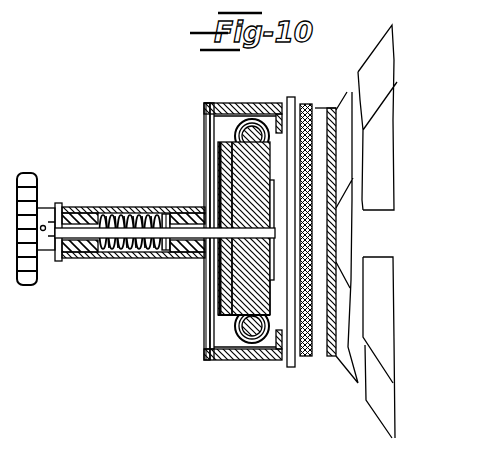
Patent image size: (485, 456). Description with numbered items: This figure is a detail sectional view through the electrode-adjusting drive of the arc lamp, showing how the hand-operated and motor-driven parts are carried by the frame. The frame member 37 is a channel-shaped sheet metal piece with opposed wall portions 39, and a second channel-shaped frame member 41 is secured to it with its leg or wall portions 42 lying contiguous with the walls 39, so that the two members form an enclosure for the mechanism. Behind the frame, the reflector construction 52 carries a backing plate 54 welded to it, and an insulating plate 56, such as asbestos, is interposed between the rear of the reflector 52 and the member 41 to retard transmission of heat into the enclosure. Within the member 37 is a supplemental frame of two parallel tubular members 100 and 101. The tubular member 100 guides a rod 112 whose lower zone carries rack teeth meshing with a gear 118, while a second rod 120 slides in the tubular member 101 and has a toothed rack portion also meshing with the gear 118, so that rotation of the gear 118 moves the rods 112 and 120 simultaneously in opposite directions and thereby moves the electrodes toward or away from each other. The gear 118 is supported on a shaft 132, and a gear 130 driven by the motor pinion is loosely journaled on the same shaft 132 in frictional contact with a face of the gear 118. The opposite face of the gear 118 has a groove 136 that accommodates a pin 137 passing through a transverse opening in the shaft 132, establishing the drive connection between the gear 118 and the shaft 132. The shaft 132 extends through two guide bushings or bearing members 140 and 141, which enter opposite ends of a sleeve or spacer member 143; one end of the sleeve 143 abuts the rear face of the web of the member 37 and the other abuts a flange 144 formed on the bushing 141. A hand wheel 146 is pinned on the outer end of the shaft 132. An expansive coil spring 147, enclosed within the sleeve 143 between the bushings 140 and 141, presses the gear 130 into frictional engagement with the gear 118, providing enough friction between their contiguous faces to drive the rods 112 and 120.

The frame member 37 is at (205, 162).
The wall portions 39 is at (228, 104).
The second channel-shaped frame member 41 is at (318, 334).
The wall portions 42 is at (262, 84).
The reflector construction 52 is at (373, 48).
The backing plate 54 is at (340, 105).
The insulating plate 56 is at (306, 100).
The tubular member 100 is at (240, 333).
The tubular member 101 is at (208, 114).
The rod 112 is at (212, 348).
The gear 118 is at (272, 285).
The second rod 120 is at (236, 127).
The gear 130 is at (222, 172).
The shaft 132 is at (182, 227).
The groove 136 is at (245, 320).
The pin 137 is at (258, 296).
The bushing 140 is at (172, 253).
The bushing 141 is at (80, 258).
The sleeve 143 is at (103, 207).
The flange 144 is at (57, 203).
The hand wheel 146 is at (36, 176).
The coil spring 147 is at (120, 208).